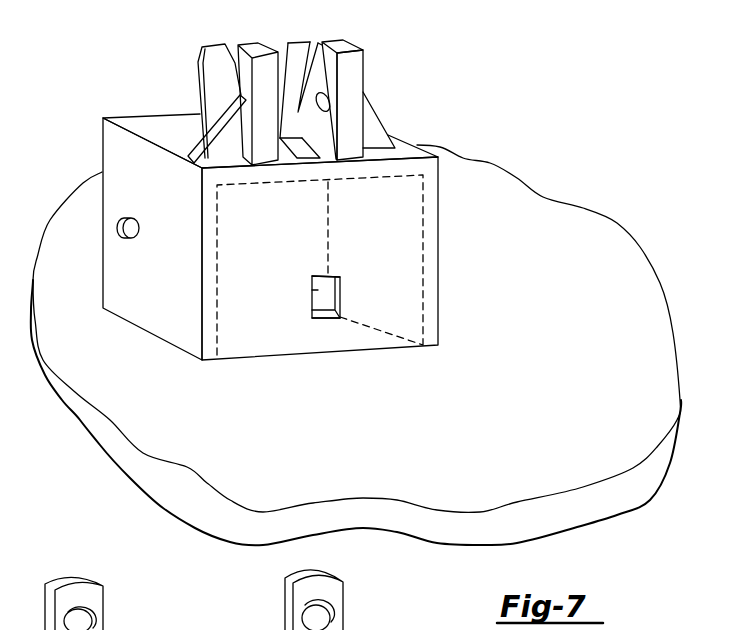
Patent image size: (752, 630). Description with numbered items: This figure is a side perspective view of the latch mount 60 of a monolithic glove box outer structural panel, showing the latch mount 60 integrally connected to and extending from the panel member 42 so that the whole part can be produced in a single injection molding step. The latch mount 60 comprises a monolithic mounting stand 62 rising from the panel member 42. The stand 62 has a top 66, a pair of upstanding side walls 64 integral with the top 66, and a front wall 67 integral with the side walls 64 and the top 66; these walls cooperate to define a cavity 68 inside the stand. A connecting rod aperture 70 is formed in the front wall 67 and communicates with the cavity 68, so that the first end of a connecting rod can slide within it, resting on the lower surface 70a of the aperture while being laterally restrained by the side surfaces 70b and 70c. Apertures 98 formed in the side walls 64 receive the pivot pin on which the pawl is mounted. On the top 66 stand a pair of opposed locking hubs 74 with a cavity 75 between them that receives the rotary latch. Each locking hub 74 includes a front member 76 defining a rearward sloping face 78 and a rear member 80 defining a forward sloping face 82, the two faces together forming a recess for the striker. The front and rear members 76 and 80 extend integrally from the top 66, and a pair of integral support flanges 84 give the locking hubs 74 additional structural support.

The panel member 42 is at (640, 487).
The latch mount 60 is at (273, 202).
The mounting stand 62 is at (103, 139).
The side walls 64 is at (432, 202).
The top 66 is at (142, 125).
The front wall 67 is at (243, 345).
The cavity 68 is at (320, 290).
The connecting rod aperture 70 is at (329, 310).
The lower surface 70a is at (325, 318).
The side surface 70b is at (315, 285).
The side surface 70c is at (338, 284).
The locking hubs 74 is at (208, 39).
The cavity 75 is at (297, 160).
The front member 76 is at (362, 73).
The rearward sloping face 78 is at (320, 43).
The rear member 80 is at (290, 48).
The forward sloping face 82 is at (298, 57).
The support flanges 84 is at (213, 155).
The apertures 98 is at (125, 228).